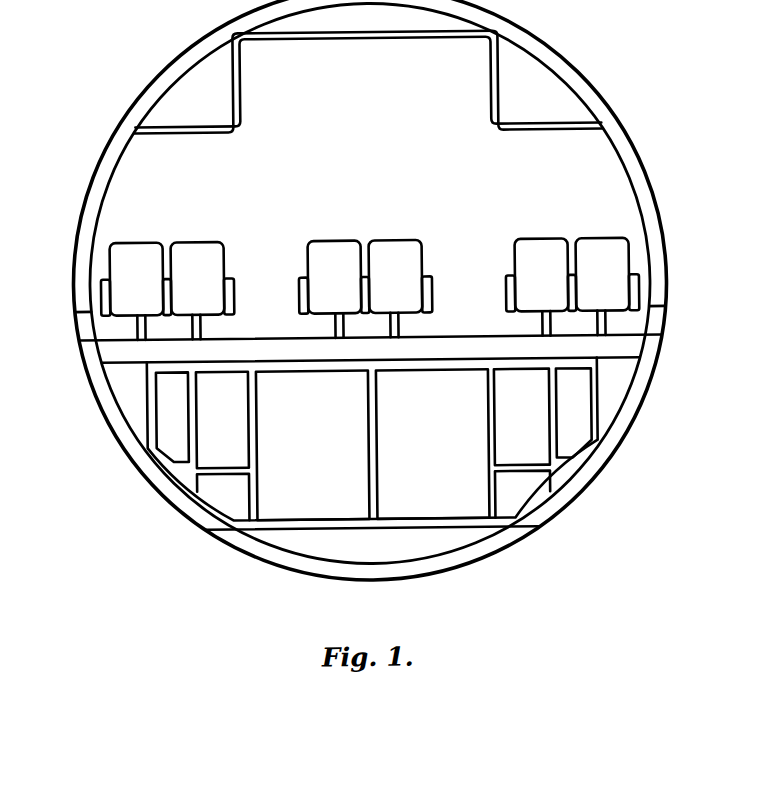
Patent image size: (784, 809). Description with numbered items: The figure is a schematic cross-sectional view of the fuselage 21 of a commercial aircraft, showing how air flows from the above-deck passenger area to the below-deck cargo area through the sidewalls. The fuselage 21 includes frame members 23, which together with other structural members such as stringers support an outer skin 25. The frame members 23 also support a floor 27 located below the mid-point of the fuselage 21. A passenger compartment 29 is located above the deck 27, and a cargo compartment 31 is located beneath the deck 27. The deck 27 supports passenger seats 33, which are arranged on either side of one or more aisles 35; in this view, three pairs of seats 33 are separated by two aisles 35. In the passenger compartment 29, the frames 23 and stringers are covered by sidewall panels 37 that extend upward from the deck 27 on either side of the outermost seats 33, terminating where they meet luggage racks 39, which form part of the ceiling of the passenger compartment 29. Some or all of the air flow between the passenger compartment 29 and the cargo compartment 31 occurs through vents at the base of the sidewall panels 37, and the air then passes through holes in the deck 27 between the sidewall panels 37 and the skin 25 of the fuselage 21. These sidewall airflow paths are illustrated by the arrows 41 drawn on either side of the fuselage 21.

The fuselage 21 is at (600, 82).
The frame members 23 is at (631, 153).
The outer skin 25 is at (664, 225).
The floor 27 is at (434, 343).
The passenger compartment 29 is at (395, 142).
The cargo compartment 31 is at (434, 459).
The passenger seats 33 is at (182, 240).
The aisles 35 is at (259, 266).
The sidewall panels 37 is at (117, 158).
The luggage racks 39 is at (232, 132).
The arrows 41 is at (102, 315).